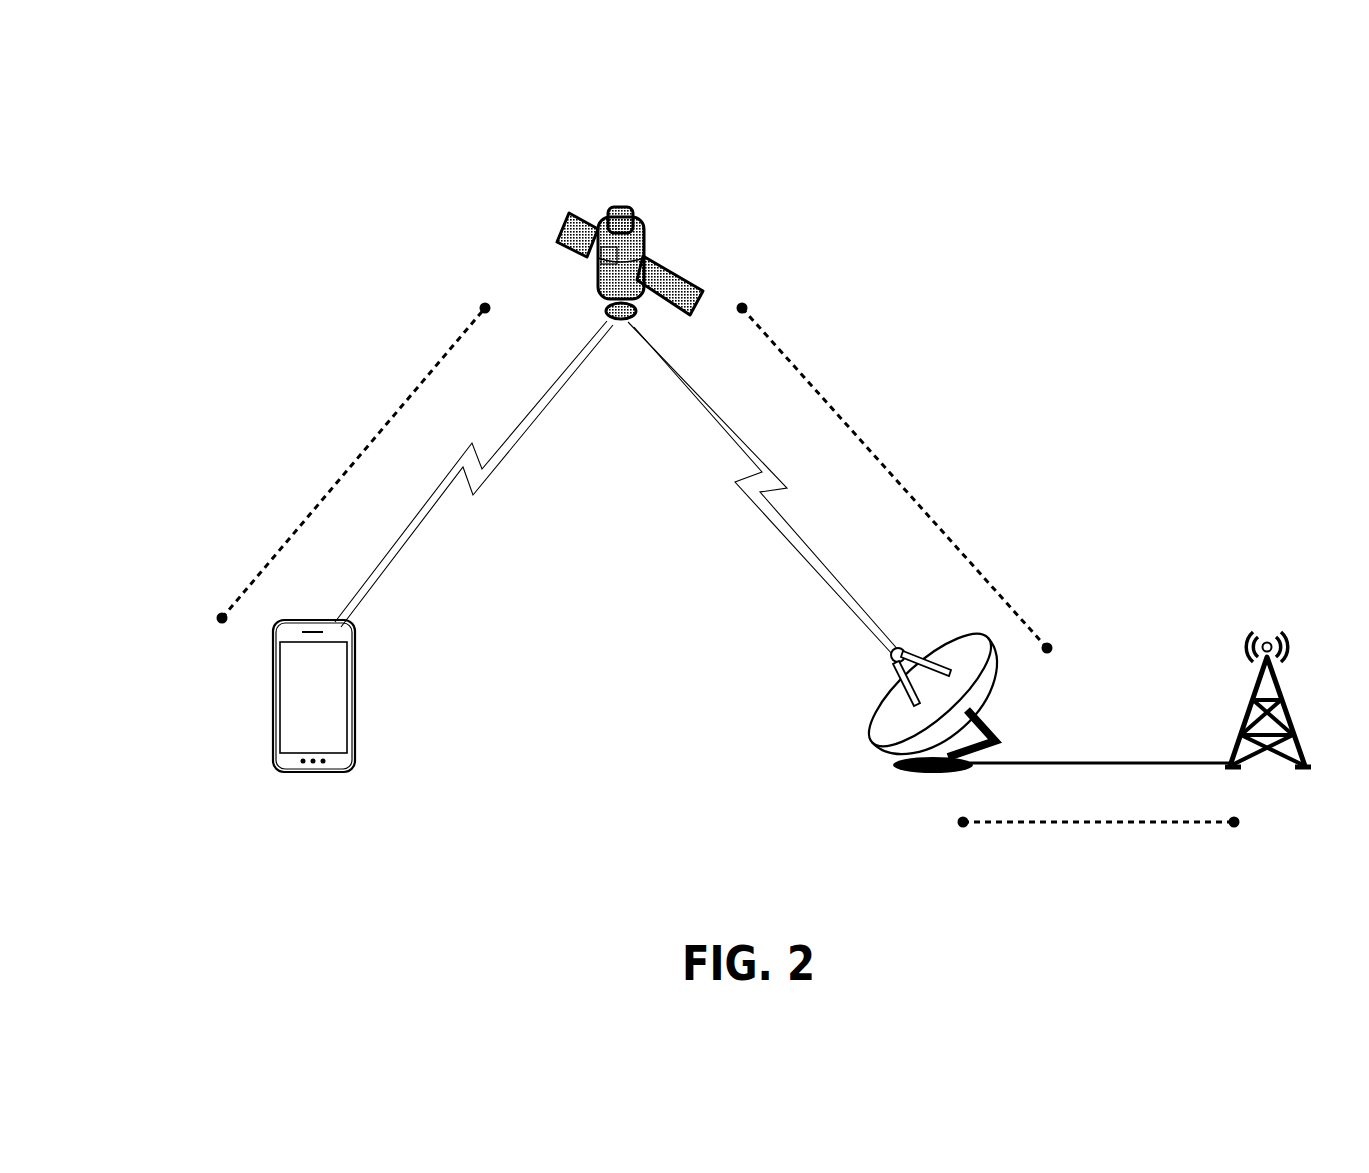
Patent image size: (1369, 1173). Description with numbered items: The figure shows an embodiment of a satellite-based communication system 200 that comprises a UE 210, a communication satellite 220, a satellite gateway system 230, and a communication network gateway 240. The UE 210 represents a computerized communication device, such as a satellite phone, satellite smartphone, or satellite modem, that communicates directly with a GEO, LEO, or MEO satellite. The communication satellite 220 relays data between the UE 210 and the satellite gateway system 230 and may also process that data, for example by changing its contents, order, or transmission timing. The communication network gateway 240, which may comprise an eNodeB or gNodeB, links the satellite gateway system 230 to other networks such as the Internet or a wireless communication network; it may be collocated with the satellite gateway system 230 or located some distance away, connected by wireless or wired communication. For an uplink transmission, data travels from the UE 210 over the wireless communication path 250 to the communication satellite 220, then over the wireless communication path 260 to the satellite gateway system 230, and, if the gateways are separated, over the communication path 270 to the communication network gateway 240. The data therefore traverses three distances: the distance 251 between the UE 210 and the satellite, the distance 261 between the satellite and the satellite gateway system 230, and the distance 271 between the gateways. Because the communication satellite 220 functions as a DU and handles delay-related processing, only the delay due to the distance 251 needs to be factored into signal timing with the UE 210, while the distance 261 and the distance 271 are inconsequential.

The satellite-based communication system 200 is at (168, 127).
The UE 210 is at (333, 711).
The communication satellite 220 is at (565, 222).
The satellite gateway system 230 is at (873, 722).
The communication network gateway 240 is at (1243, 730).
The wireless communication path 250 is at (442, 493).
The distance 251 is at (430, 373).
The wireless communication path 260 is at (753, 502).
The distance 261 is at (887, 470).
The communication path 270 is at (1138, 763).
The distance 271 is at (1095, 825).